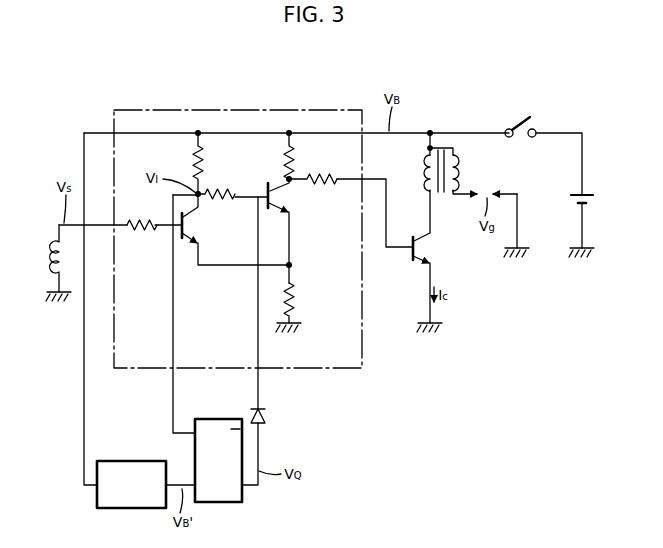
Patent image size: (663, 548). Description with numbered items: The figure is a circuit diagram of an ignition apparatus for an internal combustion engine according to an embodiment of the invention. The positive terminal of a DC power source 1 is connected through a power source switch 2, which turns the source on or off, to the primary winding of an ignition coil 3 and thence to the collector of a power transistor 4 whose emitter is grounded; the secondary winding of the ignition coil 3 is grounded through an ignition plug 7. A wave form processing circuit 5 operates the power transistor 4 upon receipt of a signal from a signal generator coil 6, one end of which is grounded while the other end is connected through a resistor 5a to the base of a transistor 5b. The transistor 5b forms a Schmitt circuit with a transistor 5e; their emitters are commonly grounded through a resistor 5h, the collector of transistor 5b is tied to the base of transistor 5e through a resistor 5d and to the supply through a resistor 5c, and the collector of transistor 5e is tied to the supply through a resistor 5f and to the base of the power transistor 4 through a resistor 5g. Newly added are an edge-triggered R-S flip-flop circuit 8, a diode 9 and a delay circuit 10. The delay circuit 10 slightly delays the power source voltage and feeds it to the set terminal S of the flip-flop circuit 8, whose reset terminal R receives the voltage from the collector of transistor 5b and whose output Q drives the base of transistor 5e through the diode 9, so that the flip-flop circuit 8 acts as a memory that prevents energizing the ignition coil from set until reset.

The DC power source 1 is at (596, 198).
The power source switch 2 is at (533, 122).
The ignition coil 3 is at (443, 148).
The power transistor 4 is at (421, 243).
The wave form processing circuit 5 is at (268, 108).
The resistor 5a is at (140, 232).
The transistor 5b is at (187, 226).
The resistor 5c is at (205, 162).
The resistor 5d is at (231, 205).
The transistor 5e is at (277, 198).
The resistor 5f is at (300, 151).
The resistor 5g is at (335, 188).
The resistor 5h is at (297, 291).
The signal generator coil 6 is at (52, 262).
The ignition plug 7 is at (486, 190).
The flip-flop circuit 8 is at (222, 503).
The diode 9 is at (267, 414).
The delay circuit 10 is at (133, 509).